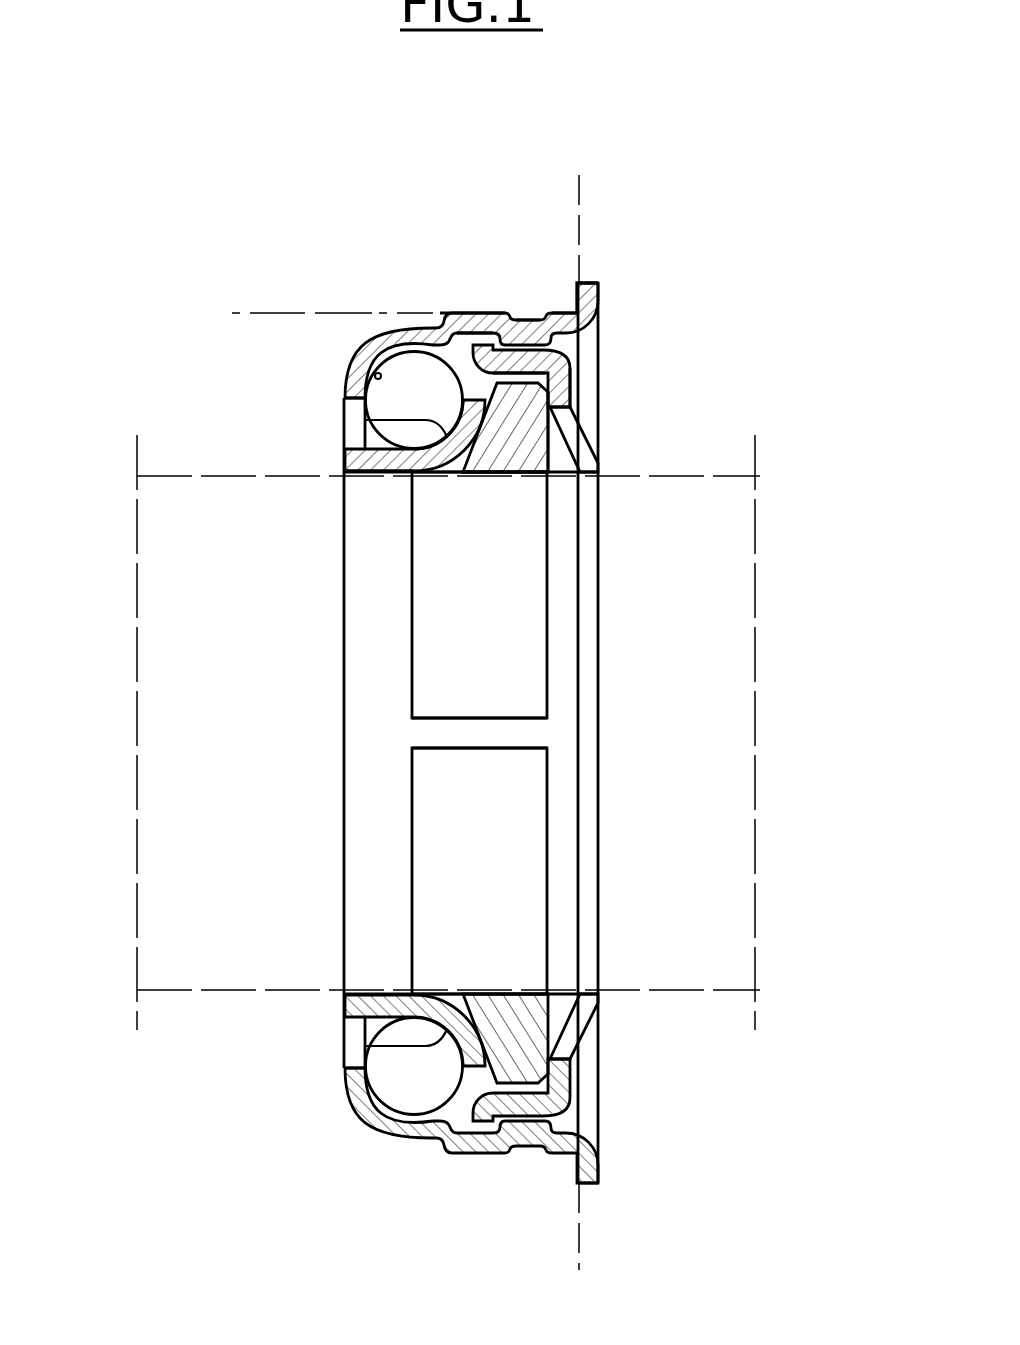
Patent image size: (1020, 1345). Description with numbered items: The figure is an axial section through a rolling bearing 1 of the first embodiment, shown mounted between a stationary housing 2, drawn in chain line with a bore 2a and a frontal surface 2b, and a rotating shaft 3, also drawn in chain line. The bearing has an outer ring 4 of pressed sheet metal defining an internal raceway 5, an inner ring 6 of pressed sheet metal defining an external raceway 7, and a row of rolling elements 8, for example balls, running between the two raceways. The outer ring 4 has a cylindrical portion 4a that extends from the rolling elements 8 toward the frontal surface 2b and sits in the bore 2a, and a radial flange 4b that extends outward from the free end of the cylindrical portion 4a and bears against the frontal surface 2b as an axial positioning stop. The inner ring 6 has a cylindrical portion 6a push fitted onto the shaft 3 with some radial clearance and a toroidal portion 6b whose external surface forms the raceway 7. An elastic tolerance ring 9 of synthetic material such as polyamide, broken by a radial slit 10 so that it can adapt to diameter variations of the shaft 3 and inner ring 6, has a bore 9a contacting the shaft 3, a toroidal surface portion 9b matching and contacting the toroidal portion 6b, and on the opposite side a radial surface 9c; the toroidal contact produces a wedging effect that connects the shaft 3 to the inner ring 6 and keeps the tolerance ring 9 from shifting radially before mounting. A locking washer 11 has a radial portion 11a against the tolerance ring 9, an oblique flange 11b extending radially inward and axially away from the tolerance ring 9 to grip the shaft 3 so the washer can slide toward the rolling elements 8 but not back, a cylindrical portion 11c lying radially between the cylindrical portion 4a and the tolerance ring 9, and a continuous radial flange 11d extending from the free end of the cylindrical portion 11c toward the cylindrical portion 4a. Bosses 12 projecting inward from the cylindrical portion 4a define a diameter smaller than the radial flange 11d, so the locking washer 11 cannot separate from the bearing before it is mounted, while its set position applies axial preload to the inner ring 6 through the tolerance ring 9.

The rolling bearing 1 is at (618, 293).
The stationary housing 2 is at (580, 252).
The bore 2a is at (274, 312).
The frontal surface 2b is at (580, 198).
The rotating shaft 3 is at (210, 473).
The outer ring 4 is at (377, 339).
The cylindrical portion 4a is at (455, 313).
The radial flange 4b is at (580, 295).
The raceway 5 is at (366, 372).
The inner ring 6 is at (343, 460).
The cylindrical portion 6a is at (380, 477).
The toroidal portion 6b is at (447, 437).
The raceway 7 is at (365, 420).
The rolling elements 8 is at (388, 390).
The elastic tolerance ring 9 is at (510, 475).
The bore 9a is at (502, 640).
The toroidal surface portion 9b is at (547, 523).
The radial surface 9c is at (543, 480).
The radial slit 10 is at (517, 728).
The locking washer 11 is at (572, 369).
The radial portion 11a is at (570, 393).
The oblique flange 11b is at (577, 438).
The cylindrical portion 11c is at (520, 360).
The radial flange 11d is at (480, 335).
The bosses 12 is at (522, 325).